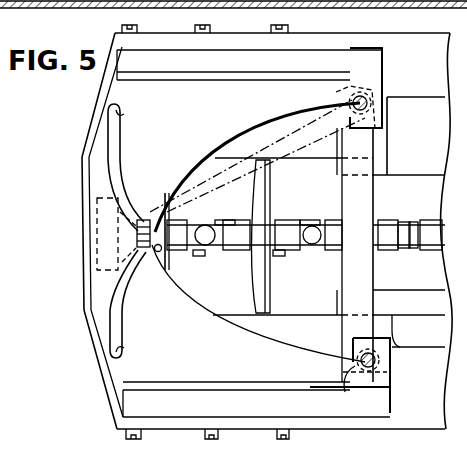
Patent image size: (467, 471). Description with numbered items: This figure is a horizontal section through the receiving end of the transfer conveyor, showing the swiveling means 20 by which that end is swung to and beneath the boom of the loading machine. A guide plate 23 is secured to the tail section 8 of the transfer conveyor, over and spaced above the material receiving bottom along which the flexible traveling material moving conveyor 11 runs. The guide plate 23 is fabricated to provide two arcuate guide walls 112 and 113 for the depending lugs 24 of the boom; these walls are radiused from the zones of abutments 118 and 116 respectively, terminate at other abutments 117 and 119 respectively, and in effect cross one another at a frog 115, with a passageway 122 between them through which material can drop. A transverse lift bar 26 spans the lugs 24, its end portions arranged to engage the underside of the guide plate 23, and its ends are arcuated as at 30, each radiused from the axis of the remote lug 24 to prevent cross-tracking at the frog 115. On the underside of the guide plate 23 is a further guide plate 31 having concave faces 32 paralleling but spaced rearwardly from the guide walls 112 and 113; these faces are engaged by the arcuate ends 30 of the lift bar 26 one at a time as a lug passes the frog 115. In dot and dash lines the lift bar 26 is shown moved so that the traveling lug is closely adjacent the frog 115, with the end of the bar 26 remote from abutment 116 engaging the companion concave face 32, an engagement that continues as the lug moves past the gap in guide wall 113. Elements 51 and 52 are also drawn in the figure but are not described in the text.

The tail section 8 is at (394, 33).
The flexible traveling material moving conveyor 11 is at (286, 221).
The swiveling means 20 is at (375, 152).
The guide plate 23 is at (82, 165).
The lugs 24 is at (352, 106).
The lift bar 26 is at (272, 140).
The arcuate ends of lift bar 30 is at (387, 98).
The guide plate 31 is at (97, 228).
The concave faces 32 is at (134, 192).
The chain roller 51 is at (401, 250).
The blade 52 is at (264, 279).
The arcuate guide wall 112 is at (208, 160).
The arcuate guide wall 113 is at (205, 317).
The frog 115 is at (157, 214).
The abutment 116 is at (358, 100).
The abutment 117 is at (121, 357).
The abutment 118 is at (361, 389).
The abutment 119 is at (118, 116).
The passageway 122 is at (238, 276).